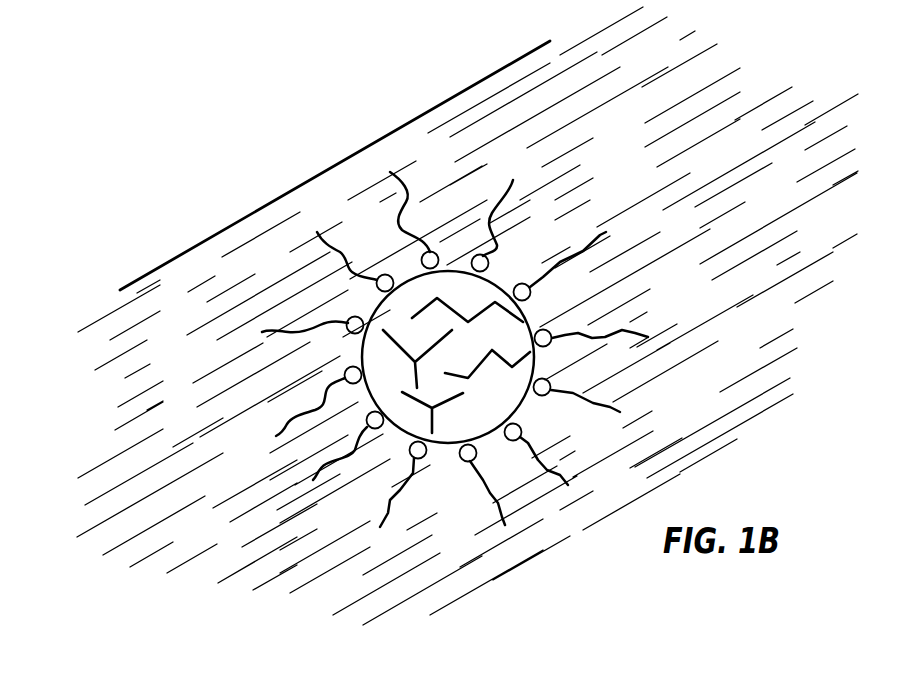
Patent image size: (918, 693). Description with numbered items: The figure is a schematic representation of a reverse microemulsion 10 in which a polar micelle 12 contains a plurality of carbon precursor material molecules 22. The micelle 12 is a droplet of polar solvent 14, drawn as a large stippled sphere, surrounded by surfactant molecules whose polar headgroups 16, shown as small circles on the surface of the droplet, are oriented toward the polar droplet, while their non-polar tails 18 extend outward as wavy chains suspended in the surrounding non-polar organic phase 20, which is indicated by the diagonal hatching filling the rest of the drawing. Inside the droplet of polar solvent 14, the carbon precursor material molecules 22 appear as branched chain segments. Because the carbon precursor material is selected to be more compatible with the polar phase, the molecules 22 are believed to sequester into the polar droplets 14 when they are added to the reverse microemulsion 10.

The reverse microemulsion 10 is at (712, 325).
The polar micelle 12 is at (285, 266).
The polar solvent 14 is at (512, 400).
The polar headgroups 16 is at (531, 294).
The non-polar tails 18 is at (588, 236).
The organic phase 20 is at (697, 116).
The carbon precursor material molecules 22 is at (478, 368).